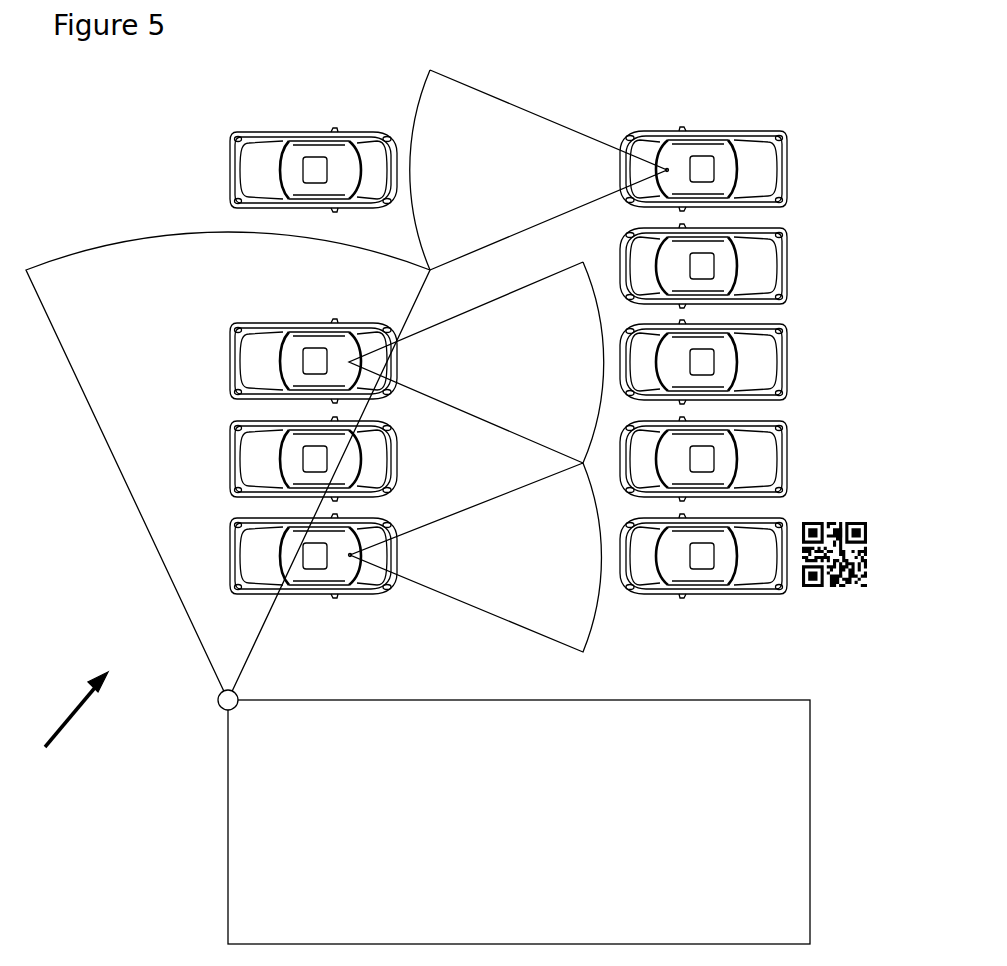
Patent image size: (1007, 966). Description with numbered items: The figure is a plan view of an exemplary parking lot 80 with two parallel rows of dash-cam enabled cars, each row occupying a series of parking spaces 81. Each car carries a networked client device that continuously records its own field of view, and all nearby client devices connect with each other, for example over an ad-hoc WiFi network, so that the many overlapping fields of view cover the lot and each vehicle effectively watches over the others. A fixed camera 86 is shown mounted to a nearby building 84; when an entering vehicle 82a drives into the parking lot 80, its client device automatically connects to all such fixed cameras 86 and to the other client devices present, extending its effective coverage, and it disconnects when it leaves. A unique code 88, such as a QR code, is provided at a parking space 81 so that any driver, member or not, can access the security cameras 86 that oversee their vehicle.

The parking lot 80 is at (64, 731).
The parking space 81 is at (260, 275).
The entering vehicle 82a is at (265, 168).
The building 84 is at (367, 882).
The fixed camera 86 is at (217, 704).
The unique code 88 is at (835, 585).